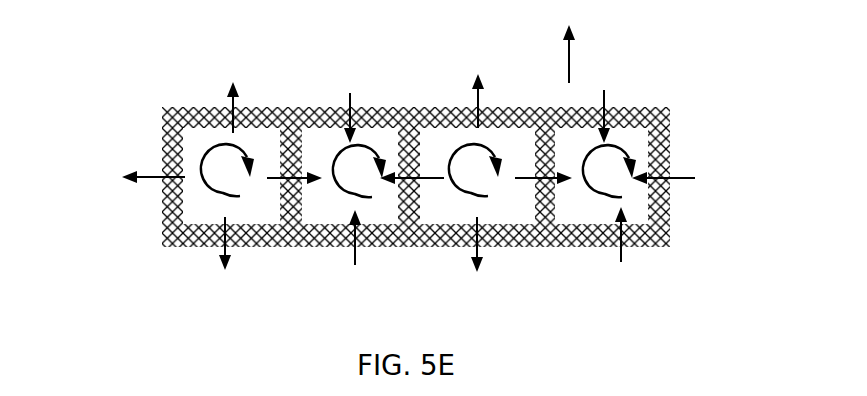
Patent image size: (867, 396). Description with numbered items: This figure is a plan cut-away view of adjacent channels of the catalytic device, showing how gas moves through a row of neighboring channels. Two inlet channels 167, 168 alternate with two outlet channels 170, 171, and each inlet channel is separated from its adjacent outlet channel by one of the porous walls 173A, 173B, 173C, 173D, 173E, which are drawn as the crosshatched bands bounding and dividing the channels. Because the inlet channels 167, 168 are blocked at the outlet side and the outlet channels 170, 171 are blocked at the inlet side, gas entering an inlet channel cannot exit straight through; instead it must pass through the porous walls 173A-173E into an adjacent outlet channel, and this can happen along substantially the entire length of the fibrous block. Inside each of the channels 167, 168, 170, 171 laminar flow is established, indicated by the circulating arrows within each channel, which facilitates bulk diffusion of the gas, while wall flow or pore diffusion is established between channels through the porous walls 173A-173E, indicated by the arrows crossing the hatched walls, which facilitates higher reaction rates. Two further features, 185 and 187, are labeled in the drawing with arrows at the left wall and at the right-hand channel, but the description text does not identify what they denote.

The inlet channel 167 is at (172, 113).
The inlet channel 168 is at (426, 114).
The outlet channel 170 is at (324, 218).
The outlet channel 171 is at (603, 222).
The porous wall 173A is at (175, 162).
The porous wall 173B is at (292, 133).
The porous wall 173C is at (414, 208).
The porous wall 173D is at (545, 135).
The porous wall 173E is at (667, 158).
The inlet opening 185 is at (155, 199).
The flow vortex 187 is at (639, 138).